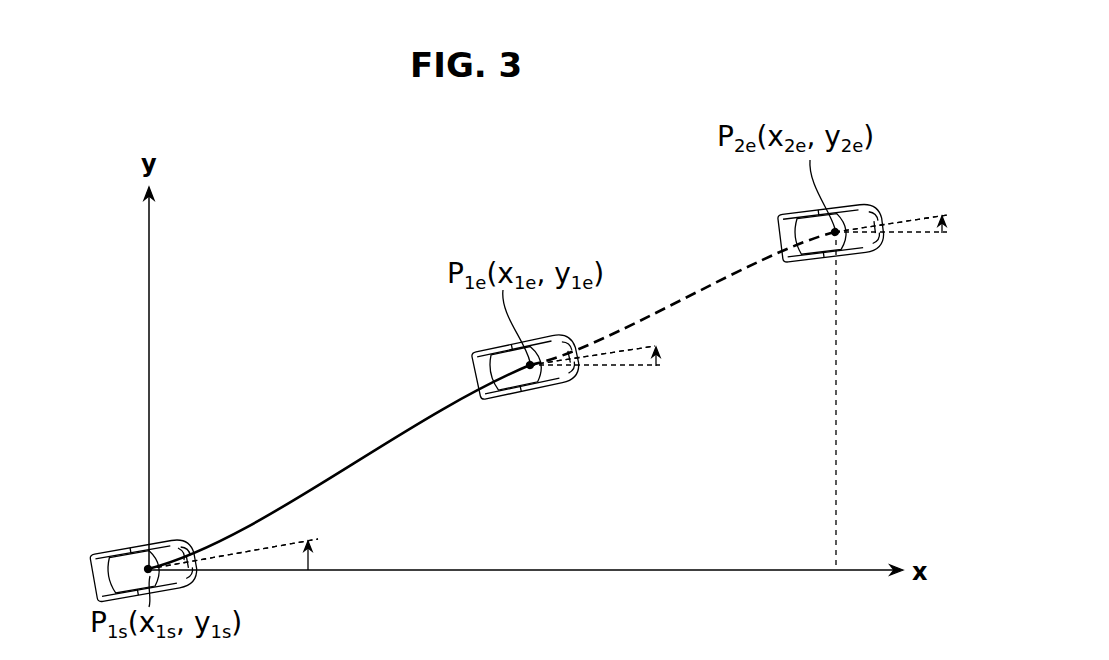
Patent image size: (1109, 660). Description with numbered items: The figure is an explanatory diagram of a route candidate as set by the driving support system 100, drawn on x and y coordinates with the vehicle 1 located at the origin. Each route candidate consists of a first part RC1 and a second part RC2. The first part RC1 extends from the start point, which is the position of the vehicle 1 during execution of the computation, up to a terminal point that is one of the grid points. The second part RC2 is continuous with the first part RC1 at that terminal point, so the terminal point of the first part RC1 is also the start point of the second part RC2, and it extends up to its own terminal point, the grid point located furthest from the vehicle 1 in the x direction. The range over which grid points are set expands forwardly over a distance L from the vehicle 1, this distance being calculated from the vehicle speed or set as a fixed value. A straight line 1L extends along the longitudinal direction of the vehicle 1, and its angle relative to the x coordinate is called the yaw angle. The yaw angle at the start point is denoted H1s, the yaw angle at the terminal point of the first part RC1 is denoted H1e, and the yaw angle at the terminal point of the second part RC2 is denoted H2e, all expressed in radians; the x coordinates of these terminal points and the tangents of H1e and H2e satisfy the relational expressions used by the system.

The vehicle 1 is at (106, 548).
The driving support system 100 is at (178, 548).
The straight line extending along the longitudinal direction of the vehicle 1L is at (261, 555).
The first part of the route candidate RC1 is at (375, 444).
The second part of the route candidate RC2 is at (689, 297).
The yaw angle at the start point H1s is at (251, 555).
The yaw angle at the terminal point of the first part H1e is at (617, 358).
The yaw angle at the terminal point of the second part H2e is at (897, 238).
The distance L is at (841, 421).